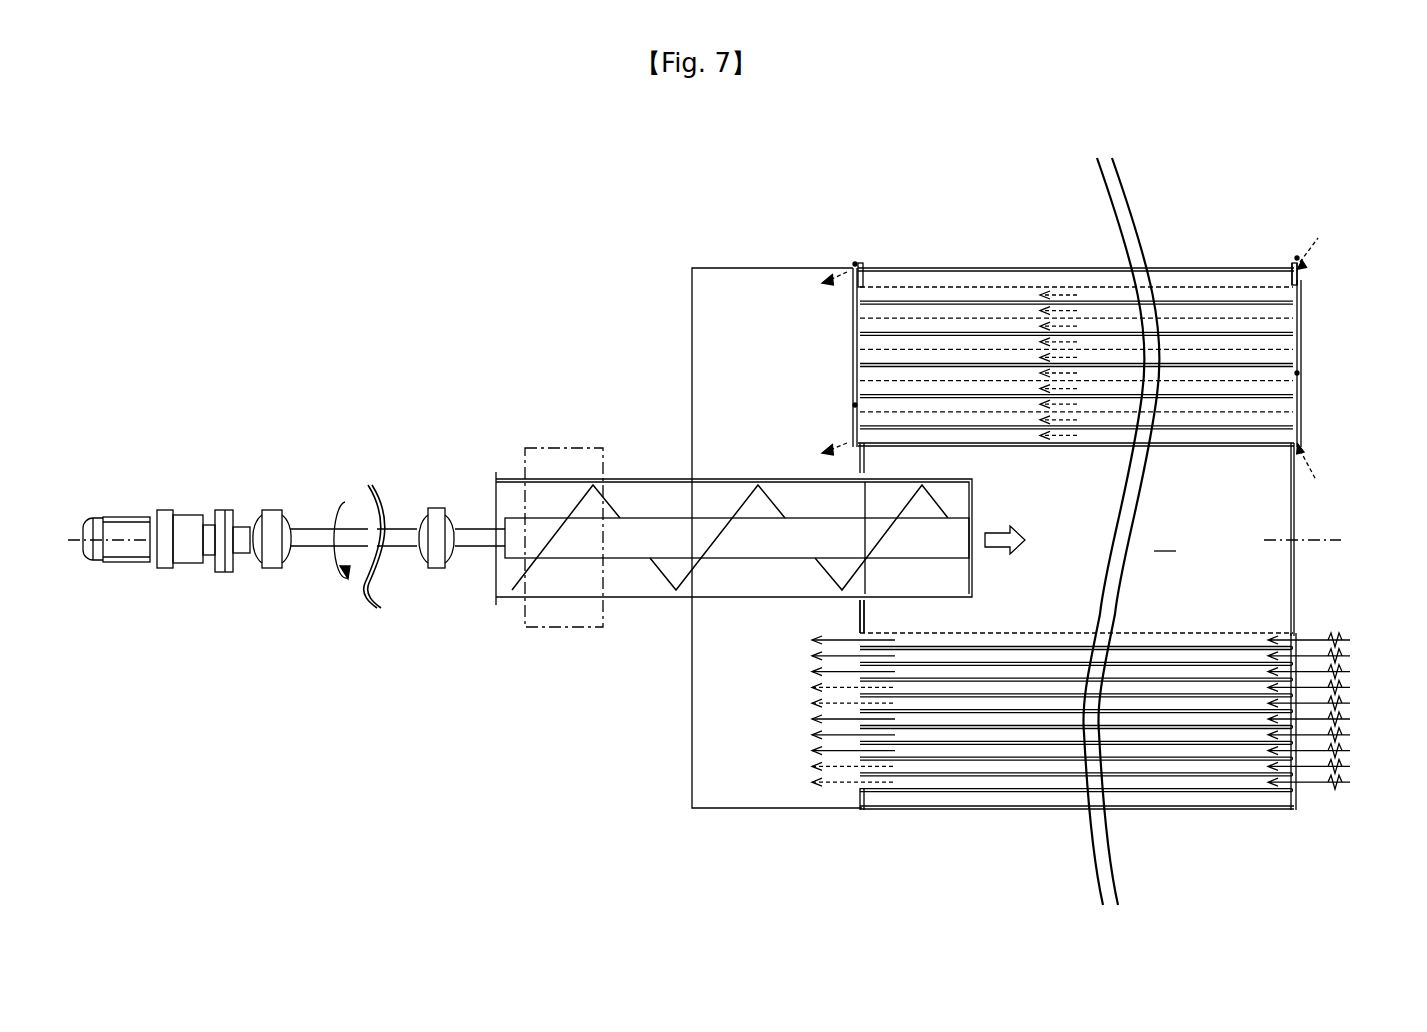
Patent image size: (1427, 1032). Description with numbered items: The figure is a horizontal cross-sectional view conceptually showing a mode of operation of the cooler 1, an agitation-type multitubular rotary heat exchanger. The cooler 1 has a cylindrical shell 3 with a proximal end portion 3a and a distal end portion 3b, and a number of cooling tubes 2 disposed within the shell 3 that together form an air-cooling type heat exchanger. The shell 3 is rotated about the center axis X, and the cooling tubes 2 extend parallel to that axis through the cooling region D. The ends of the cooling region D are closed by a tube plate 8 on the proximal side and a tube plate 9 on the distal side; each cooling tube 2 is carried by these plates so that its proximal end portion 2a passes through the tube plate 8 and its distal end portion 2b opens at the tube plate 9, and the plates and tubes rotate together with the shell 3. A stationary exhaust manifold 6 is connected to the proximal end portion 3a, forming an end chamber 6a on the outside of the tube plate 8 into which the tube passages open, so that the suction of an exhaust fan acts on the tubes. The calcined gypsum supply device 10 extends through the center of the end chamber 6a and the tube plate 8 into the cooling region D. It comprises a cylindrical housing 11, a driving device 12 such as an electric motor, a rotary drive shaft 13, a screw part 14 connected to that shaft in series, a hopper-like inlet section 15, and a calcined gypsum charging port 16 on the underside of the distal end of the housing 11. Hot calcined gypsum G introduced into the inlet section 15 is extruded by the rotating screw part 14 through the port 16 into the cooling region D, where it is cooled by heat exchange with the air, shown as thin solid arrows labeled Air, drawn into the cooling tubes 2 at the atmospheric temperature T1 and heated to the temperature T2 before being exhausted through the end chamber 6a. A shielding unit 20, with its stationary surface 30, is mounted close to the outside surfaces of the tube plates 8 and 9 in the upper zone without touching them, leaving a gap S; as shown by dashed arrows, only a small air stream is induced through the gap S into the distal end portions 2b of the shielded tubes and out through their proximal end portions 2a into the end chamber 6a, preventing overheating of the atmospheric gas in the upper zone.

The agitation-type cooler 1 is at (1038, 182).
The cooling tube 2 is at (1055, 286).
The proximal end portion 2a is at (870, 441).
The distal end portion 2b is at (1290, 418).
The cylindrical shell 3 is at (982, 267).
The proximal end portion 3a is at (862, 811).
The distal end portion 3b is at (1291, 812).
The exhaust manifold 6 is at (778, 266).
The end chamber 6a is at (790, 316).
The tube plate 8 is at (865, 625).
The tube plate 9 is at (1297, 585).
The calcined gypsum supply device 10 is at (365, 408).
The cylindrical housing 11 is at (515, 600).
The driving device 12 is at (130, 517).
The rotary drive shaft 13 is at (308, 548).
The screw part 14 is at (763, 547).
The inlet section 15 is at (563, 450).
The calcined gypsum charging port 16 is at (957, 495).
The shielding unit 20 is at (843, 368).
The stationary surface 30 is at (863, 288).
The gap S is at (856, 262).
The atmospheric temperature T1 is at (1328, 711).
The heated air temperature T2 is at (835, 711).
The air stream Air is at (1379, 694).
The calcined gypsum G is at (1020, 540).
The cooling region D is at (1165, 537).
The center axis X is at (704, 540).